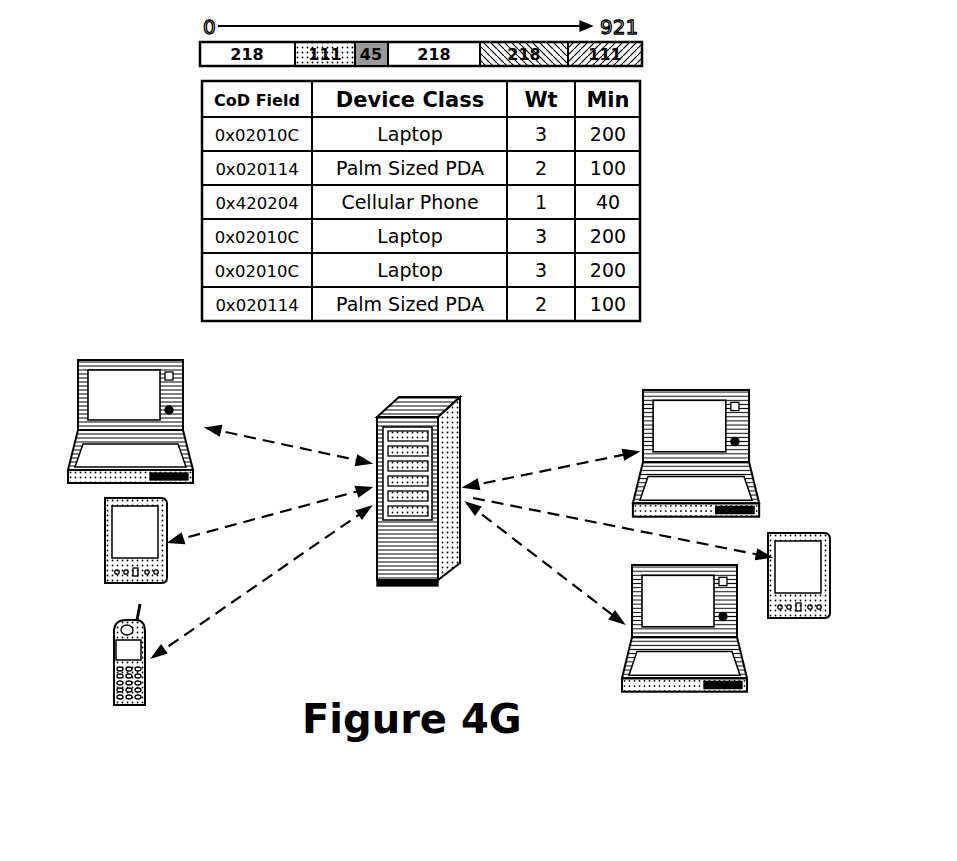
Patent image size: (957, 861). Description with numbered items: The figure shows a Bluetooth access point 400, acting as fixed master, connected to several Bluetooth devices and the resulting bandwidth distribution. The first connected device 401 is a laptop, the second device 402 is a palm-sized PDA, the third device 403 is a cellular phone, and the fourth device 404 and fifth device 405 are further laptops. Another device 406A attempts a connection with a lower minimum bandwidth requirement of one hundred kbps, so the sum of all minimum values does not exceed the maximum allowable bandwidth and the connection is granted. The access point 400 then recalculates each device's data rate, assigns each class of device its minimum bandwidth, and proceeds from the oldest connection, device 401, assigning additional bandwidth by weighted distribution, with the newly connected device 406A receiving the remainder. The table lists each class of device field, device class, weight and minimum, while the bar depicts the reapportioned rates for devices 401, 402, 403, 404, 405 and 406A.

The Bluetooth access point 400 is at (428, 586).
The Bluetooth-enabled device 401 is at (78, 400).
The second device 402 is at (105, 572).
The third device 403 is at (112, 677).
The fourth device 404 is at (749, 440).
The fifth device 405 is at (690, 694).
The another device 406A is at (825, 548).